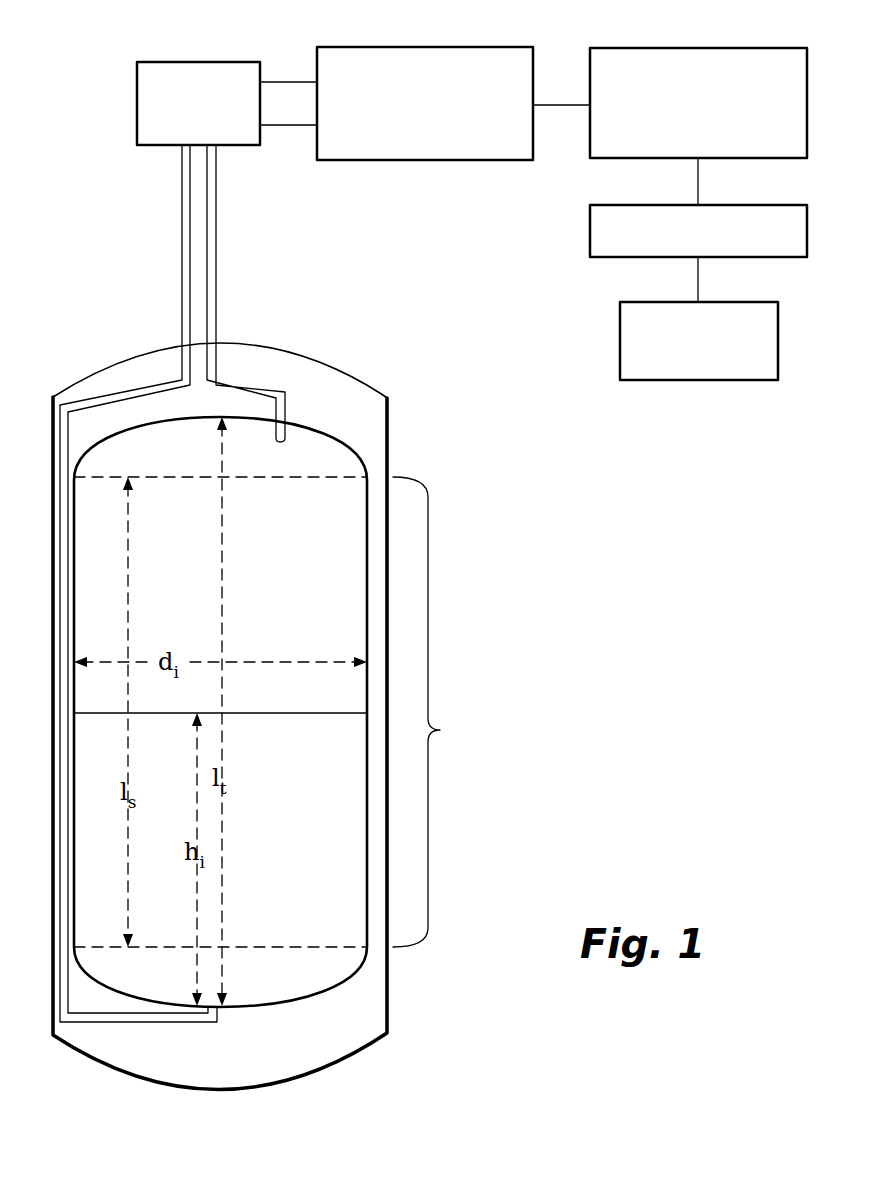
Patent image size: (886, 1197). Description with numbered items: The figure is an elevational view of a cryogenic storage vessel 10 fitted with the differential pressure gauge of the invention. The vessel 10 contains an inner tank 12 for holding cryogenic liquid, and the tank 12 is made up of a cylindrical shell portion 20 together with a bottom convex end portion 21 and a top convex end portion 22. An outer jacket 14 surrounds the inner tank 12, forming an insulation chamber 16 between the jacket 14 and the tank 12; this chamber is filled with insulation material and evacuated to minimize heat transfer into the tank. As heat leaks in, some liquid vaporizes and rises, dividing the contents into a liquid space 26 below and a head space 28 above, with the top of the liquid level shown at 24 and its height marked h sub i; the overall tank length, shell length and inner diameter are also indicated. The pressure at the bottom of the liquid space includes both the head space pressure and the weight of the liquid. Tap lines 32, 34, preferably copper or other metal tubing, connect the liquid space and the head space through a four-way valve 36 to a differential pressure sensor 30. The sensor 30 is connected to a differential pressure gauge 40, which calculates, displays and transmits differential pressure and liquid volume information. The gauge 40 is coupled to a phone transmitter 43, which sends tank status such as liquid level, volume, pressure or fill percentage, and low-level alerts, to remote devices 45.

The cryogenic storage vessel 10 is at (448, 628).
The inner tank 12 is at (93, 515).
The outer jacket 14 is at (53, 748).
The insulation chamber 16 is at (60, 664).
The shell portion 20 is at (442, 712).
The bottom convex end portion 21 is at (307, 975).
The top convex end portion 22 is at (295, 457).
The liquid level 24 is at (293, 715).
The liquid space 26 is at (298, 865).
The head space 28 is at (318, 590).
The differential pressure sensor 30 is at (404, 47).
The tap line 32 is at (286, 82).
The tap line 34 is at (276, 126).
The 4-way valve 36 is at (172, 62).
The differential pressure gauge 40 is at (684, 48).
The phone transmitter 43 is at (807, 221).
The remote devices 45 is at (778, 337).